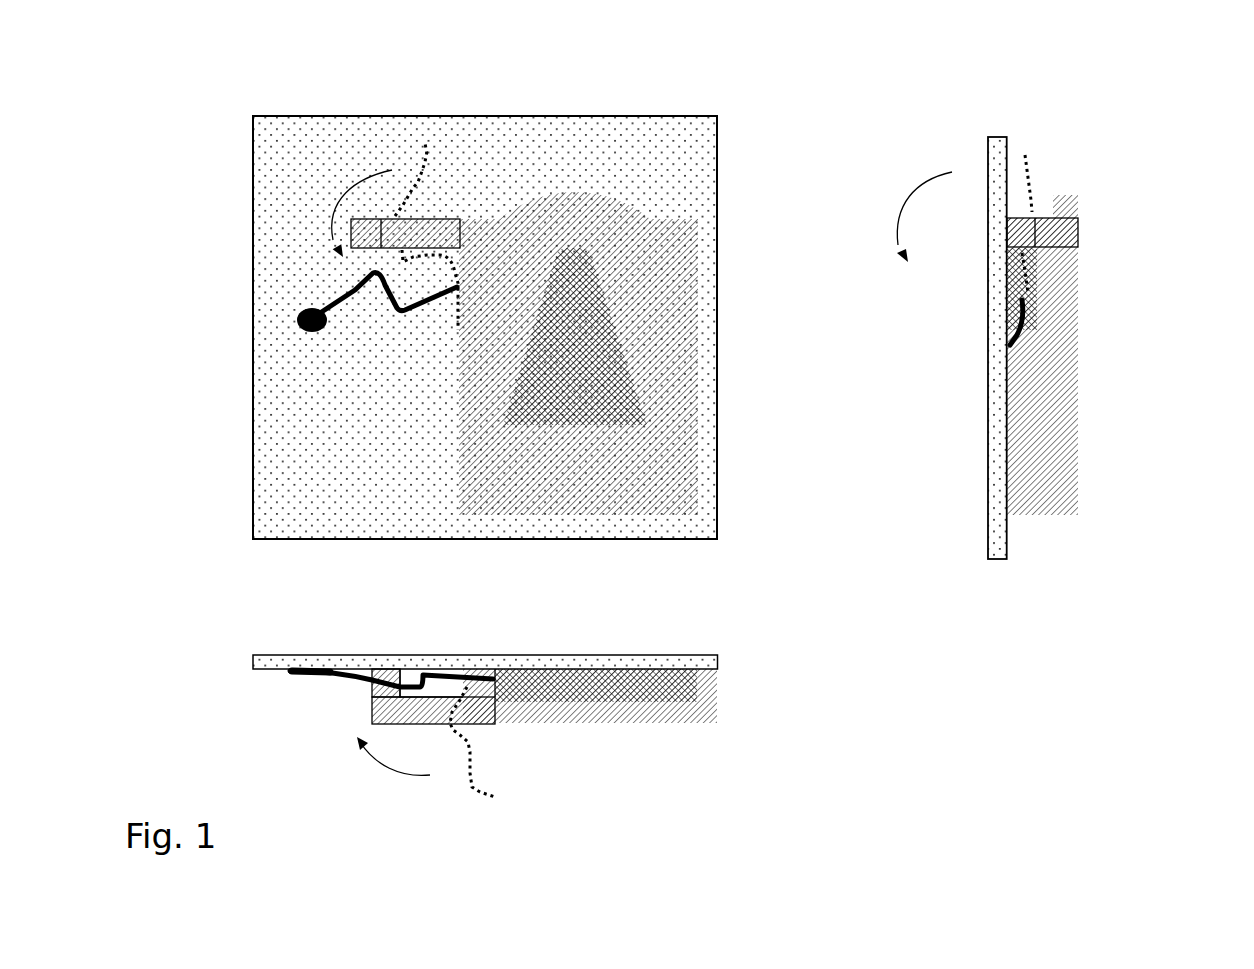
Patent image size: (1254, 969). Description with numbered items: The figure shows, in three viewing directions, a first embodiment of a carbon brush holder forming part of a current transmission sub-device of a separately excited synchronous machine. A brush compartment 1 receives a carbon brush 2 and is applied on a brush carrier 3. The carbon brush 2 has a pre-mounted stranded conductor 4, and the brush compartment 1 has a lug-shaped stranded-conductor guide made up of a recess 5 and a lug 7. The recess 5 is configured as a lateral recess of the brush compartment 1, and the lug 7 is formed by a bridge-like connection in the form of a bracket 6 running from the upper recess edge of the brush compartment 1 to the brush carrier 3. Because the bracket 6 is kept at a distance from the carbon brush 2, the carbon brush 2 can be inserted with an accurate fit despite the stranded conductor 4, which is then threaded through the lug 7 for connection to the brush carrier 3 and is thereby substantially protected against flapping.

The brush compartment 1 is at (660, 488).
The carbon brush 2 is at (598, 388).
The brush carrier 3 is at (652, 157).
The stranded conductor 4 is at (410, 205).
The recess 5 is at (457, 315).
The bracket 6 is at (365, 217).
The lug 7 is at (460, 672).